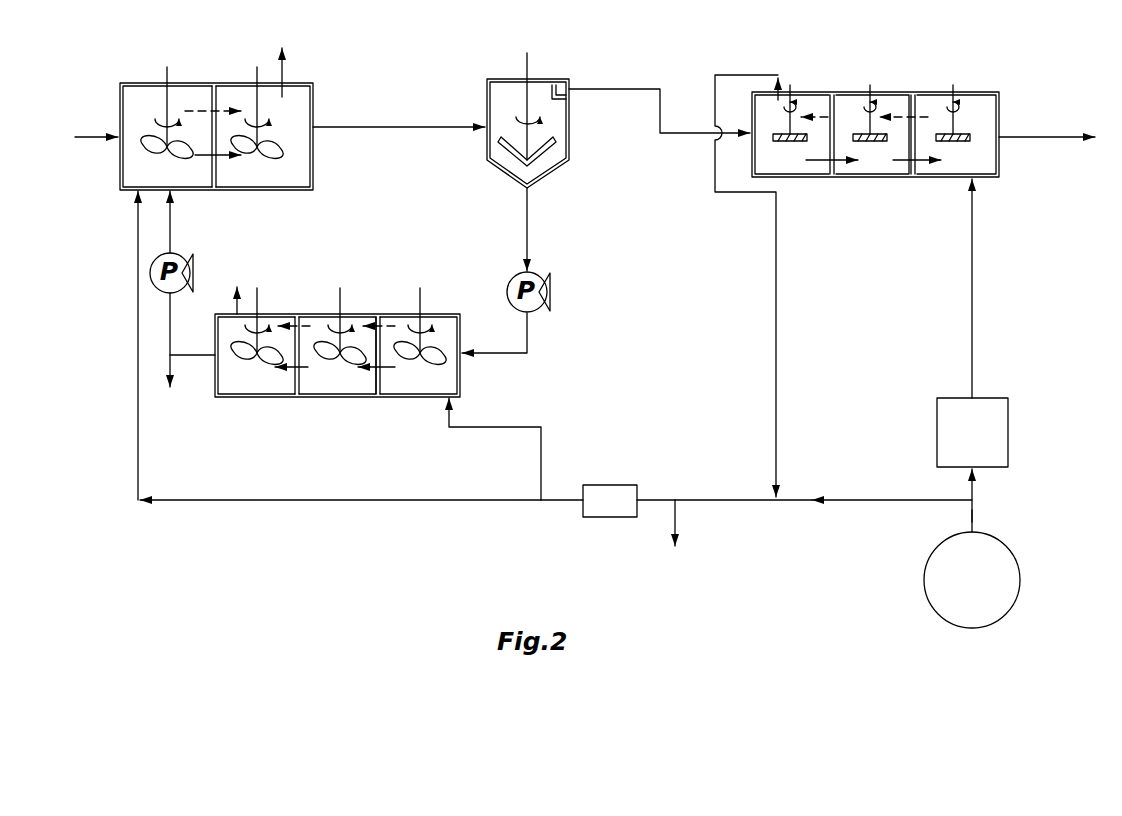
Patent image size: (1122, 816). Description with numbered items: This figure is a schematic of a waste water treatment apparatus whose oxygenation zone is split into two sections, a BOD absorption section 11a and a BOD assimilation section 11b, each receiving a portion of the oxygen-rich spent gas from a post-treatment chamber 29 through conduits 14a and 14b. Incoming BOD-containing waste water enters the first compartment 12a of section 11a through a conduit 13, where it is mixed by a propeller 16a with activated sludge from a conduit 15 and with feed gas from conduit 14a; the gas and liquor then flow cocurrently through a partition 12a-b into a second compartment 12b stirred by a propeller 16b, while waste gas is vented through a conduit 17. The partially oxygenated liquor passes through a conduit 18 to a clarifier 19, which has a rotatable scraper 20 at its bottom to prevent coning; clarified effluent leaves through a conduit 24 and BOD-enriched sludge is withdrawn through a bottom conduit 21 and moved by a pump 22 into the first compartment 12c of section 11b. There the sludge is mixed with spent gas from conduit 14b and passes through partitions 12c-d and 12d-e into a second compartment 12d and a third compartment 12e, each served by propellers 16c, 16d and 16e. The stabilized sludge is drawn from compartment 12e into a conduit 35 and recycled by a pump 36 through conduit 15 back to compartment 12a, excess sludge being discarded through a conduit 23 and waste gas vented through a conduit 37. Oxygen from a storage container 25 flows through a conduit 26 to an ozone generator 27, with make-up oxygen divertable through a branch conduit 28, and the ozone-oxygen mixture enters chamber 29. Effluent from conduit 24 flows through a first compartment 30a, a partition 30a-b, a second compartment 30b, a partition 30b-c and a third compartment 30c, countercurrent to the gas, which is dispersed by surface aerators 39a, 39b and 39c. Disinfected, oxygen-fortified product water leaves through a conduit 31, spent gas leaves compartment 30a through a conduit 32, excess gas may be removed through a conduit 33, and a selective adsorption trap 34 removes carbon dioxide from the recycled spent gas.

The BOD absorption section 11a is at (216, 138).
The first compartment 12a is at (150, 173).
The second compartment 12b is at (287, 170).
The partition 12a-b is at (216, 172).
The conduit 13 is at (79, 135).
The conduit 14a is at (137, 250).
The conduit 14b is at (545, 445).
The conduit 15 is at (182, 220).
The propeller 16a is at (150, 146).
The propeller 16b is at (280, 140).
The propeller 16c is at (427, 348).
The propeller 16d is at (330, 348).
The propeller 16e is at (263, 350).
The conduit 17 is at (284, 75).
The conduit 18 is at (380, 126).
The clarifier 19 is at (558, 124).
The rotatable scraper 20 is at (540, 156).
The bottom conduit 21 is at (529, 235).
The pump 22 is at (550, 292).
The conduit 23 is at (168, 365).
The conduit 24 is at (660, 90).
The storage container 25 is at (990, 605).
The conduit 26 is at (975, 516).
The ozone generator 27 is at (997, 432).
The branch conduit 28 is at (974, 283).
The liquid-gas contacting chamber 29 is at (876, 150).
The first compartment 30a is at (813, 167).
The second compartment 30b is at (882, 165).
The third compartment 30c is at (957, 105).
The partition 30a-b is at (836, 100).
The partition 30b-c is at (915, 165).
The conduit 31 is at (1056, 135).
The conduit 32 is at (778, 400).
The conduit 33 is at (687, 525).
The selective adsorption trap 34 is at (612, 507).
The conduit 35 is at (196, 357).
The pump 36 is at (186, 272).
The conduit 37 is at (236, 300).
The surface aerator 39a is at (791, 131).
The surface aerator 39b is at (870, 145).
The surface aerator 39c is at (958, 141).
The BOD assimilation section 11b is at (375, 370).
The first compartment 12c is at (447, 375).
The second compartment 12d is at (357, 384).
The third compartment 12e is at (284, 384).
The partition 12d-e is at (300, 384).
The partition 12c-d is at (380, 384).